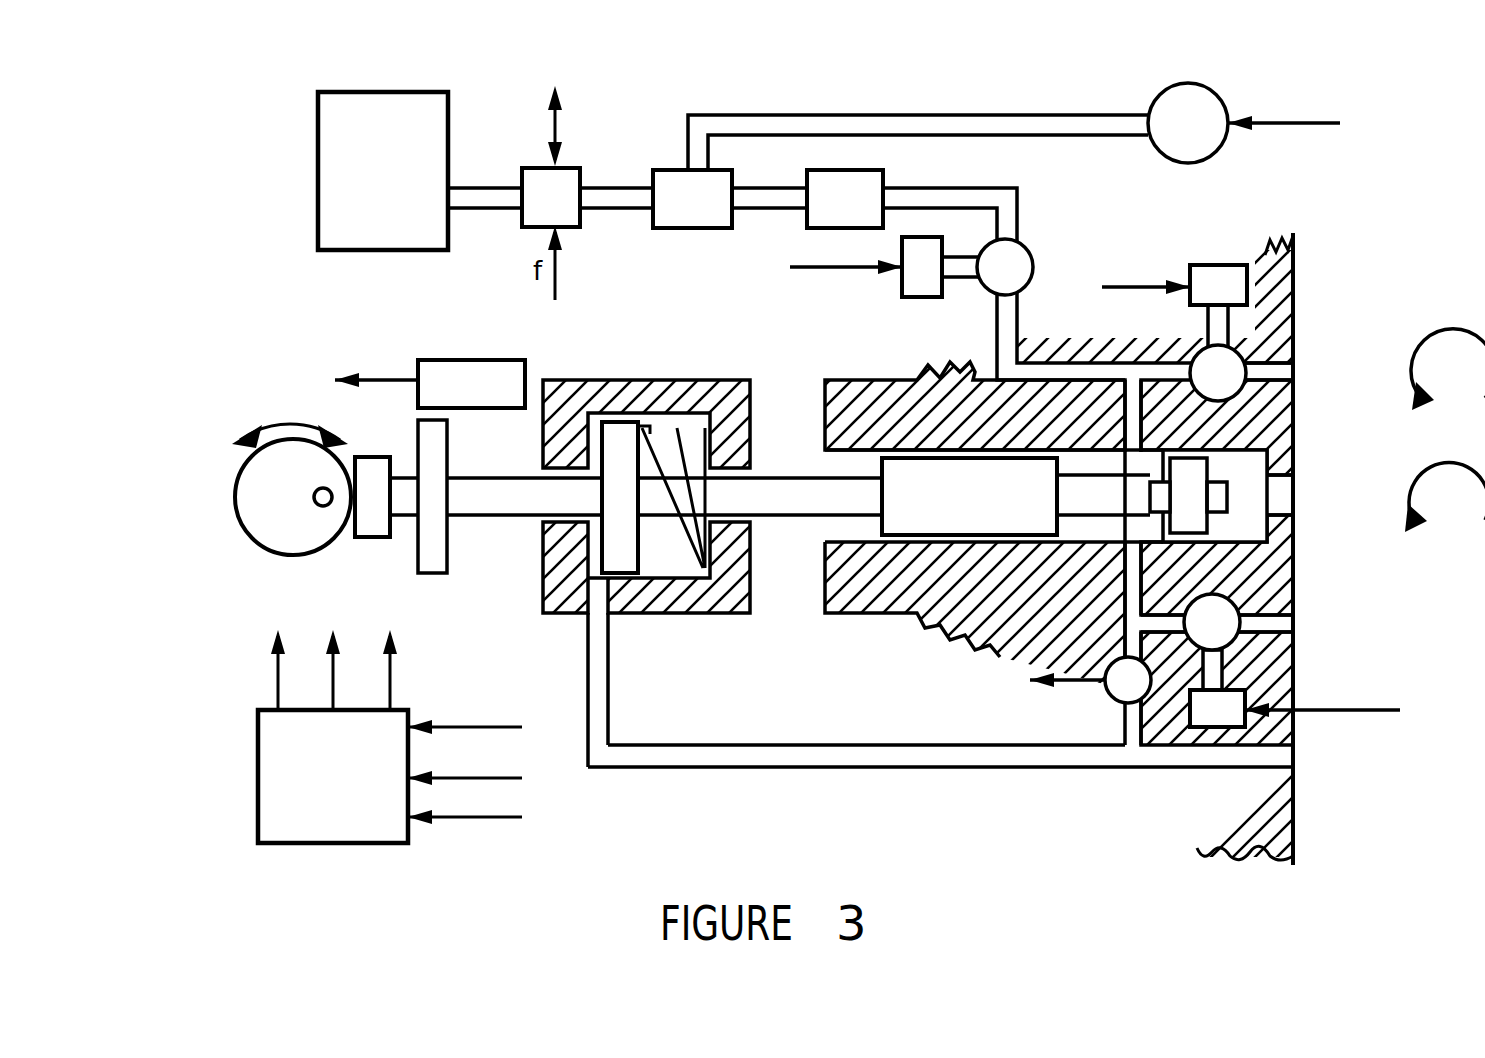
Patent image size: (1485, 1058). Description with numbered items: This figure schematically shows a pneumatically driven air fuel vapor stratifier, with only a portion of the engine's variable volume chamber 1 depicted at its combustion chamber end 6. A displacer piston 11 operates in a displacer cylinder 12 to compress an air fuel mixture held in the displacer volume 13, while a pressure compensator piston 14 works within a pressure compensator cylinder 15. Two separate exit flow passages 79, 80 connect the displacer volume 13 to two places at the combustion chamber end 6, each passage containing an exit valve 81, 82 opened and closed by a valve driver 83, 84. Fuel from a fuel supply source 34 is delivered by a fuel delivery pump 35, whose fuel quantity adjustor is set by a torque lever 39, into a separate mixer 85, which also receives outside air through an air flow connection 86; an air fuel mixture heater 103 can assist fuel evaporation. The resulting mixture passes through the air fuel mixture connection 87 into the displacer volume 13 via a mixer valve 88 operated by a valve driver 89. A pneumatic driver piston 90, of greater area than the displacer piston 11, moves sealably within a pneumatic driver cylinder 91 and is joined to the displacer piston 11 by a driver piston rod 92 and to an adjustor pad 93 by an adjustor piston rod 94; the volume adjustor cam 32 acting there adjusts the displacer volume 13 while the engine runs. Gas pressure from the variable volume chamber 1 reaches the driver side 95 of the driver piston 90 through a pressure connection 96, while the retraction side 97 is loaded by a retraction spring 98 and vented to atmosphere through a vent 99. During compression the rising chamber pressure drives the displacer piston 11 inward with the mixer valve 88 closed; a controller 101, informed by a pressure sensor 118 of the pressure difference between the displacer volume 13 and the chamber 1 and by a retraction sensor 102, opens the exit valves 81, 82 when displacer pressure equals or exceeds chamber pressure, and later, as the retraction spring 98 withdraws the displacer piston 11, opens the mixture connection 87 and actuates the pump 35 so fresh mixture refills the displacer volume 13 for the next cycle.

The variable volume chamber 1 is at (1445, 497).
The combustion chamber end 6 is at (1448, 369).
The displacer piston 11 is at (983, 482).
The displacer cylinder 12 is at (858, 380).
The displacer volume 13 is at (1083, 507).
The pressure compensator piston 14 is at (1185, 495).
The pressure compensator cylinder 15 is at (1233, 540).
The volume adjustor cam 32 is at (267, 502).
The fuel supply source 34 is at (335, 120).
The fuel delivery pump 35 is at (550, 187).
The torque lever 39 is at (415, 267).
The exit flow passage 79 is at (1270, 377).
The exit flow passage 80 is at (1270, 610).
The exit valve 81 is at (1237, 350).
The exit valve 82 is at (1232, 636).
The valve driver 83 is at (1218, 293).
The valve driver 84 is at (1237, 712).
The mixer 85 is at (682, 190).
The air flow connection 86 is at (837, 125).
The air fuel mixture connection 87 is at (948, 198).
The mixer valve 88 is at (1010, 242).
The valve driver 89 is at (917, 275).
The pneumatic driver piston 90 is at (622, 442).
The pneumatic driver cylinder 91 is at (660, 420).
The driver piston rod 92 is at (788, 500).
The adjustor pad 93 is at (372, 518).
The adjustor piston rod 94 is at (488, 495).
The driver side 95 is at (578, 448).
The pressure connection 96 is at (860, 757).
The retraction side 97 is at (642, 545).
The retraction spring 98 is at (665, 397).
The vent 99 is at (700, 397).
The controller 101 is at (290, 765).
The retraction sensor 102 is at (465, 373).
The air fuel mixture heater 103 is at (815, 197).
The pressure sensor 118 is at (1120, 690).